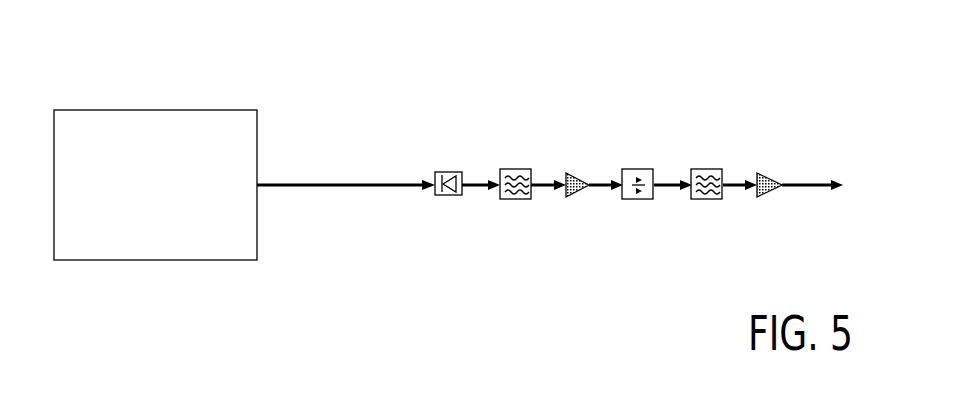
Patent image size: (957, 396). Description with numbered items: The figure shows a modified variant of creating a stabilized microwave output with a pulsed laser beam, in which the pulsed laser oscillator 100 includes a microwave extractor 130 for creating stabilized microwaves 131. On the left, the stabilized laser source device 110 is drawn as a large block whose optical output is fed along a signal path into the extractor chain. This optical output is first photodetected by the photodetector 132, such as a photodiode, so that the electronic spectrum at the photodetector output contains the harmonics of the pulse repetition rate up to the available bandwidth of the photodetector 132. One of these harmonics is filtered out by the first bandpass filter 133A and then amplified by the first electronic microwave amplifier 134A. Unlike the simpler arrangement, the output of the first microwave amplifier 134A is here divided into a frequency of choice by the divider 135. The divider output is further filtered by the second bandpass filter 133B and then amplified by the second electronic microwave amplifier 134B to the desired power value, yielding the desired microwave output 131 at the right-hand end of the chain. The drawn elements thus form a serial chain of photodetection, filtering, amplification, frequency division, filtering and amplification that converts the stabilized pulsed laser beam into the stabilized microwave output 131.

The pulsed laser oscillator 100 is at (280, 86).
The stabilized laser source device 110 is at (155, 185).
The microwave extractor 130 is at (548, 97).
The microwave output 131 is at (868, 183).
The photodetector 132 is at (441, 172).
The first bandpass filter 133A is at (513, 178).
The second bandpass filter 133B is at (704, 178).
The first electronic microwave amplifier 134A is at (568, 174).
The second electronic microwave amplifier 134B is at (759, 174).
The divider 135 is at (640, 180).